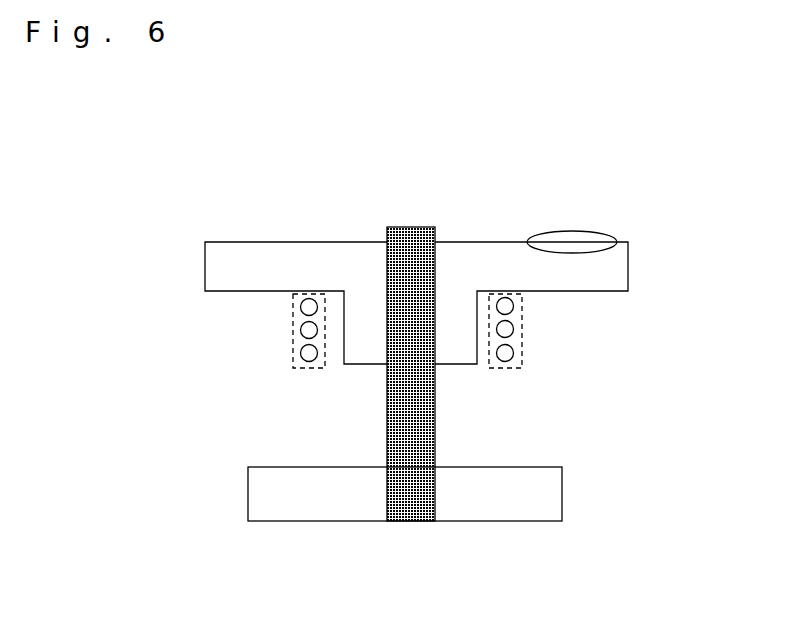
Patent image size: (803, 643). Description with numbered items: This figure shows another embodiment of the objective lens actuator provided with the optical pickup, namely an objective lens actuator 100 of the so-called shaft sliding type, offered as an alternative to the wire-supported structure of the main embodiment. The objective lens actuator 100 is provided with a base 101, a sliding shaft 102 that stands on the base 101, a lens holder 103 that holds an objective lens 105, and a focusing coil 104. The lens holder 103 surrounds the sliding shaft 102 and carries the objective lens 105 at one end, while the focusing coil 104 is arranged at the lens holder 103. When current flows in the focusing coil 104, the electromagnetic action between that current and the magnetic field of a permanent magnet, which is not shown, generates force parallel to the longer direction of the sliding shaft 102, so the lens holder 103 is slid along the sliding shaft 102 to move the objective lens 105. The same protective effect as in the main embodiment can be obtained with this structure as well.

The objective lens actuator 100 is at (606, 90).
The base 101 is at (465, 525).
The sliding shaft 102 is at (410, 228).
The lens holder 103 is at (256, 247).
The focusing coil 104 is at (527, 341).
The objective lens 105 is at (582, 232).